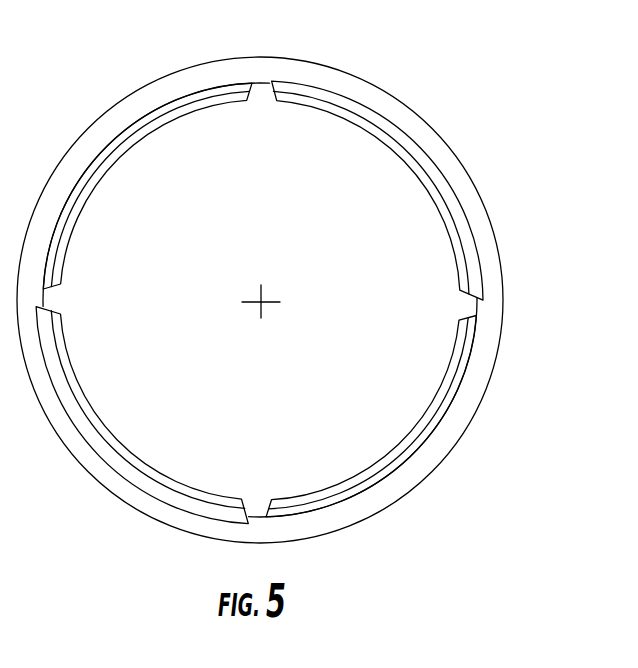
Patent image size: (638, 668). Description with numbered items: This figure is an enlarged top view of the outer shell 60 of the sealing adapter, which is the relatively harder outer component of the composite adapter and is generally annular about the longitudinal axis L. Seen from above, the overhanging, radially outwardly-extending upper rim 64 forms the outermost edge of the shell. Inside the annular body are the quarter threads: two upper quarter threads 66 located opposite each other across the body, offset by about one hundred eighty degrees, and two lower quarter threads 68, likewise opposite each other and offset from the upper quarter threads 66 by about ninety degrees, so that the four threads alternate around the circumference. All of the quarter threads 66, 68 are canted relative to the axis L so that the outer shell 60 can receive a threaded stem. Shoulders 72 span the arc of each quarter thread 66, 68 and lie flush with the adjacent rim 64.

The outer shell 60 is at (474, 109).
The upper rim 64 is at (483, 238).
The upper quarter threads 66 is at (463, 332).
The lower quarter threads 68 is at (443, 193).
The shoulders 72 is at (472, 357).